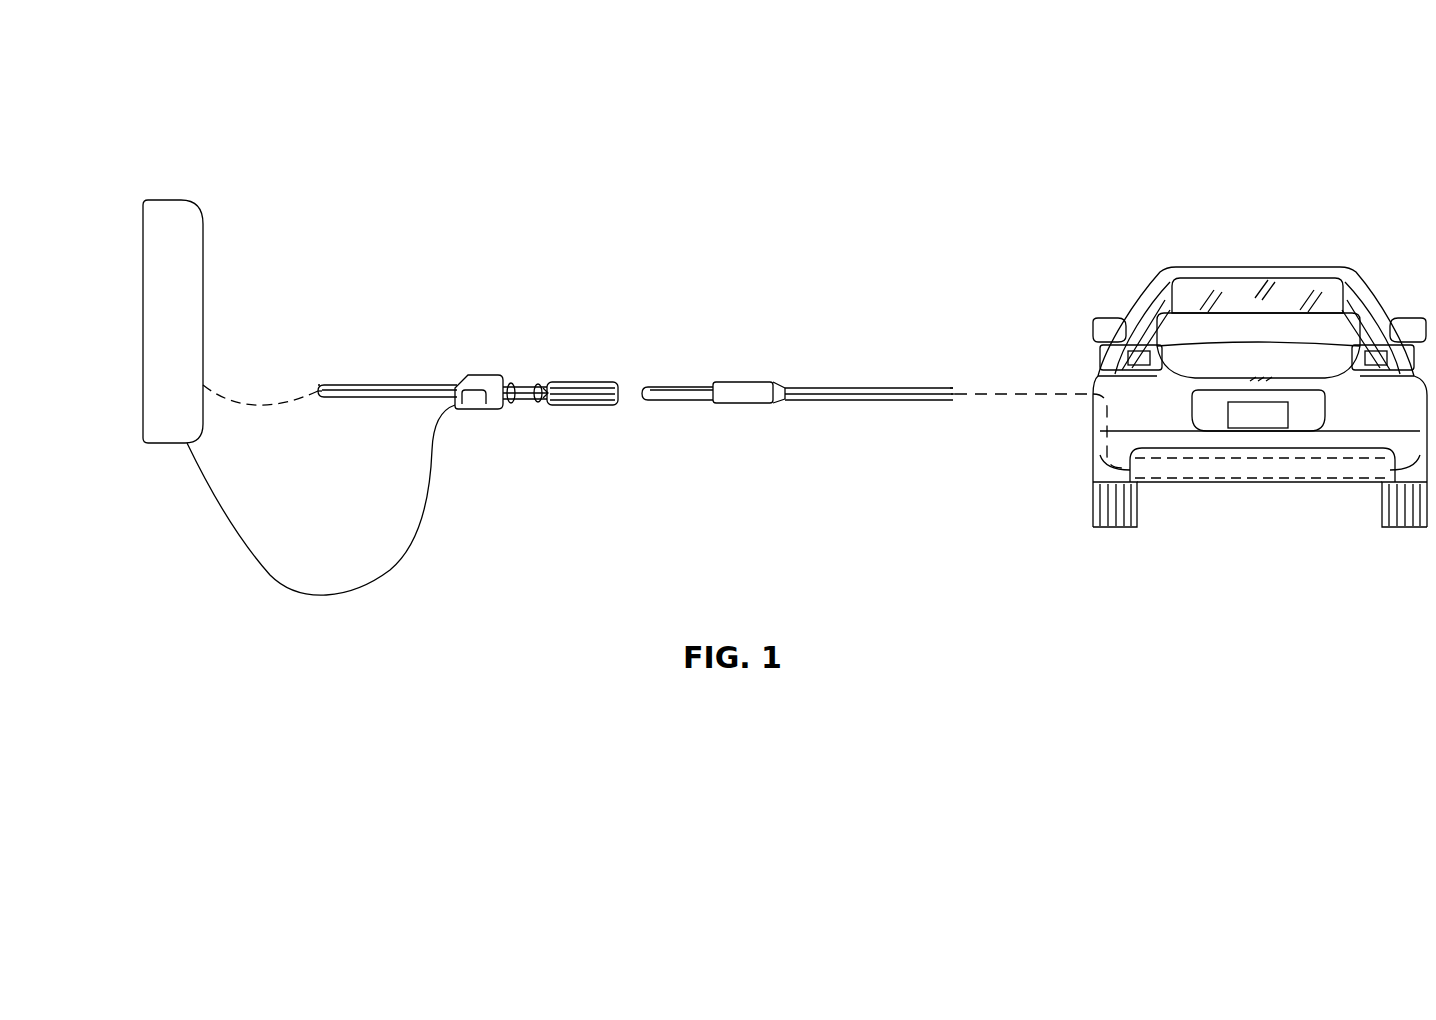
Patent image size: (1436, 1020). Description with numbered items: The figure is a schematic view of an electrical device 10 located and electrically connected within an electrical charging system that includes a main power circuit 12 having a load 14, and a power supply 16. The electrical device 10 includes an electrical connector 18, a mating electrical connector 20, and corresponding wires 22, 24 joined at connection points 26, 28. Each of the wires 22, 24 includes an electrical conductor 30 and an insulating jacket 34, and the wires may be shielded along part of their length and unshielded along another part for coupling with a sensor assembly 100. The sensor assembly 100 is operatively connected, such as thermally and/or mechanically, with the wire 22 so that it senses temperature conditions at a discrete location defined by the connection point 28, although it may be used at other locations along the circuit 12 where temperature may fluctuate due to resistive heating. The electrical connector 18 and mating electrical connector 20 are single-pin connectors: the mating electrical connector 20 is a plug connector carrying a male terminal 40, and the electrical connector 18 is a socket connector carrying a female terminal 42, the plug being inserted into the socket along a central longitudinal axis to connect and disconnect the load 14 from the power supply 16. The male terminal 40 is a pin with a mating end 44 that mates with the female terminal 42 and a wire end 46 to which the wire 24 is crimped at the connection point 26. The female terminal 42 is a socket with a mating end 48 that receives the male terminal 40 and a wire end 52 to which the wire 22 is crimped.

The electrical device 10 is at (998, 106).
The main power circuit 12 is at (1038, 400).
The load 14 is at (1272, 480).
The power supply 16 is at (140, 200).
The electrical connector 18 is at (548, 381).
The mating electrical connector 20 is at (688, 384).
The wire 22 is at (356, 398).
The wire 24 is at (920, 401).
The connection point 26 is at (778, 403).
The connection point 28 is at (515, 402).
The electrical conductor 30 is at (318, 392).
The insulating jacket 34 is at (317, 385).
The male terminal 40 is at (654, 401).
The female terminal 42 is at (598, 406).
The mating end 44 is at (645, 386).
The wire end 46 is at (776, 384).
The mating end 48 is at (606, 382).
The wire end 52 is at (548, 403).
The sensor assembly 100 is at (468, 376).